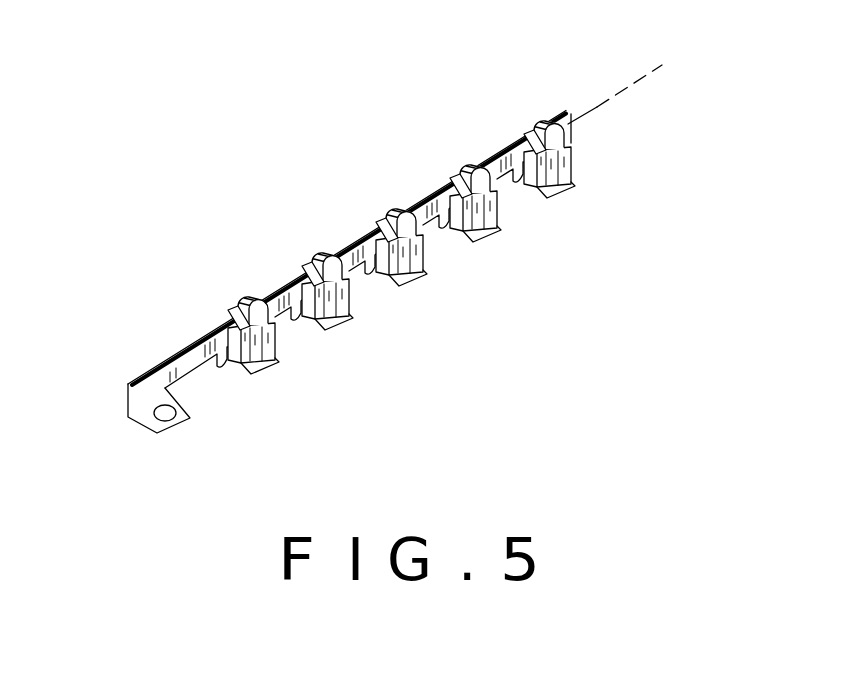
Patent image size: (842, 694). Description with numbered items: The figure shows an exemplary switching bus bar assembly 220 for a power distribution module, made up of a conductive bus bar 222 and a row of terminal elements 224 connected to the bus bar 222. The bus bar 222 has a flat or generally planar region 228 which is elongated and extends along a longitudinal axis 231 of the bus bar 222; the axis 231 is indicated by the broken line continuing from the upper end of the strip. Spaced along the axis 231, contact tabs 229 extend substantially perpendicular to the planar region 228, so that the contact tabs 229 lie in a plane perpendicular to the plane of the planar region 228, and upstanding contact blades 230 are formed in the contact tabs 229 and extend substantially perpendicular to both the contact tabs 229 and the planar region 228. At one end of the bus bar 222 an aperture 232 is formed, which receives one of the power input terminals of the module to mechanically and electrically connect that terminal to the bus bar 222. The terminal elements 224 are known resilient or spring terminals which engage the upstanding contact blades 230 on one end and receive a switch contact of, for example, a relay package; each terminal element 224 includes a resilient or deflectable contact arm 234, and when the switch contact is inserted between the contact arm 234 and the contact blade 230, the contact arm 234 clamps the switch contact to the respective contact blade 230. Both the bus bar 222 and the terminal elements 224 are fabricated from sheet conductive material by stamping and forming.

The switching bus bar assembly 220 is at (469, 76).
The conductive bus bar 222 is at (153, 444).
The terminal elements 224 is at (350, 311).
The planar region 228 is at (423, 202).
The contact tabs 229 is at (499, 234).
The upstanding contact blades 230 is at (384, 218).
The longitudinal axis 231 is at (597, 107).
The aperture 232 is at (168, 422).
The contact arm 234 is at (472, 163).